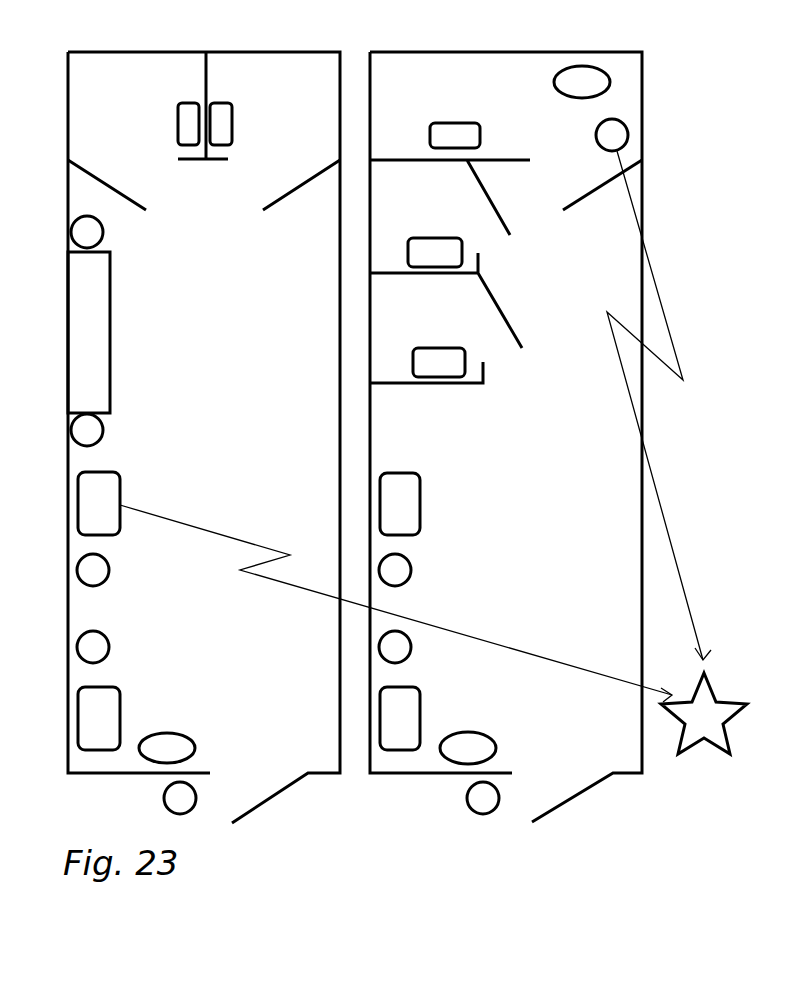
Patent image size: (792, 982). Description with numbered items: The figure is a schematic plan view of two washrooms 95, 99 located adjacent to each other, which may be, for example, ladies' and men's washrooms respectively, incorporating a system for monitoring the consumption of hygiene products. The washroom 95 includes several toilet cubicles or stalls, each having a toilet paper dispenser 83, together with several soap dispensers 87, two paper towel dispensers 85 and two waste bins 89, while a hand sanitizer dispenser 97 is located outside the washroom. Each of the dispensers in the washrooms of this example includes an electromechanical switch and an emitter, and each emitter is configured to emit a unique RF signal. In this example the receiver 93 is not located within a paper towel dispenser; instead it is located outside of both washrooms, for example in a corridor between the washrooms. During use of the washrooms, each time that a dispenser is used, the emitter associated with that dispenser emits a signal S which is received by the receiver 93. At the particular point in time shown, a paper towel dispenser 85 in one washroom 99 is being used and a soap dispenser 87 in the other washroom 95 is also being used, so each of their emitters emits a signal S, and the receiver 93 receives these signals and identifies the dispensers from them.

The washroom 99 is at (247, 33).
The washroom 95 is at (512, 34).
The toilet paper dispenser 83 is at (178, 106).
The hand sanitizer dispenser 97 is at (103, 232).
The paper towel dispenser 85 is at (116, 482).
The soap dispenser 87 is at (108, 578).
The waste bin 89 is at (180, 742).
The receiver 93 is at (717, 742).
The signal S is at (241, 538).